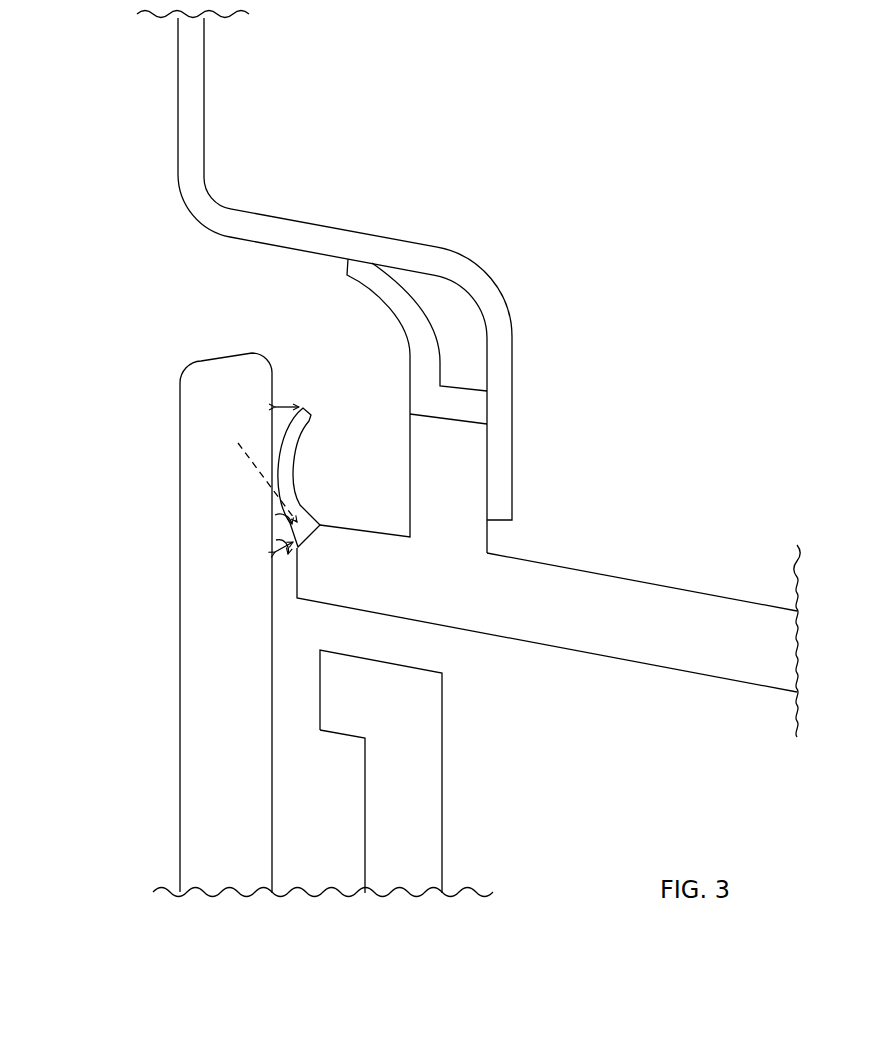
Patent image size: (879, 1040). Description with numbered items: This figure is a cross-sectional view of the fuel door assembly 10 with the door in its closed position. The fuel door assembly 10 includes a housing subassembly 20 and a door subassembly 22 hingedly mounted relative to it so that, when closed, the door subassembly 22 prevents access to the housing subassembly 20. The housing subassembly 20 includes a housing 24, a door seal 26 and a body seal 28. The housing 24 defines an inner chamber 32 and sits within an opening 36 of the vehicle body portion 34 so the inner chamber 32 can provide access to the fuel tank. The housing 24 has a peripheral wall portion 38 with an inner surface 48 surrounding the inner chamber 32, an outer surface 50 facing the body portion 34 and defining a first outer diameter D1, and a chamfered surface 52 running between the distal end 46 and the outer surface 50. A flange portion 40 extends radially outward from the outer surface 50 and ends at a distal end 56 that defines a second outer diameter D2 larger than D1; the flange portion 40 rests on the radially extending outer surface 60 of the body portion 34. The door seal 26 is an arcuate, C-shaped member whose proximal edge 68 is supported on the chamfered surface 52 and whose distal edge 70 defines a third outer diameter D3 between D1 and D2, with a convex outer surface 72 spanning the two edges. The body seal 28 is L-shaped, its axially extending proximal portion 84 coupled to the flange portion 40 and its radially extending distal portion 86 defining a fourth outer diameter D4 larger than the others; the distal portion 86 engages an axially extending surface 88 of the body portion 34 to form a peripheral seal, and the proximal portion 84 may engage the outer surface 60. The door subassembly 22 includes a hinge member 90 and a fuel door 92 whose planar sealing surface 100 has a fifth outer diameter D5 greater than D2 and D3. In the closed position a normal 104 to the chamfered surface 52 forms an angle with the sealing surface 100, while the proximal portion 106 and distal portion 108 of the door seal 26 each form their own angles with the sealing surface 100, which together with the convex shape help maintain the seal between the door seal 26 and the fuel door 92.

The fuel door assembly 10 is at (130, 103).
The housing subassembly 20 is at (663, 578).
The door subassembly 22 is at (175, 658).
The housing 24 is at (737, 680).
The door seal 26 is at (273, 503).
The body seal 28 is at (428, 343).
The inner chamber 32 is at (623, 800).
The body portion 34 is at (193, 122).
The opening 36 is at (500, 523).
The wall portion 38 is at (730, 617).
The flange portion 40 is at (468, 457).
The distal end 46 is at (298, 583).
The inner surface 48 is at (533, 643).
The outer surface 50 is at (707, 590).
The chamfered surface 52 is at (320, 522).
The distal end 56 is at (430, 412).
The radially extending outer surface 60 is at (474, 366).
The proximal edge 68 is at (299, 546).
The distal edge 70 is at (308, 410).
The convex outer surface 72 is at (270, 410).
The proximal portion 84 is at (453, 408).
The distal portion 86 is at (396, 297).
The axially extending surface 88 is at (275, 250).
The hinge member 90 is at (445, 837).
The fuel door 92 is at (182, 808).
The sealing surface 100 is at (274, 783).
The normal 104 is at (238, 443).
The proximal portion 106 is at (302, 507).
The distal portion 108 is at (306, 432).
The first outer diameter D1 is at (612, 573).
The second outer diameter D2 is at (472, 423).
The third outer diameter D3 is at (302, 407).
The fourth outer diameter D4 is at (345, 270).
The fifth outer diameter D5 is at (213, 355).